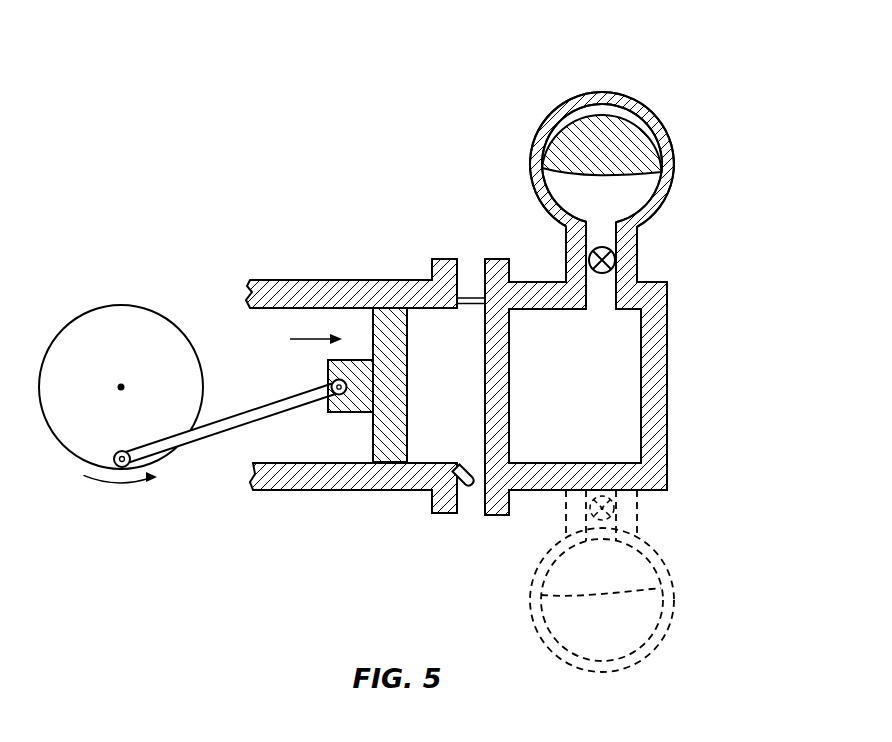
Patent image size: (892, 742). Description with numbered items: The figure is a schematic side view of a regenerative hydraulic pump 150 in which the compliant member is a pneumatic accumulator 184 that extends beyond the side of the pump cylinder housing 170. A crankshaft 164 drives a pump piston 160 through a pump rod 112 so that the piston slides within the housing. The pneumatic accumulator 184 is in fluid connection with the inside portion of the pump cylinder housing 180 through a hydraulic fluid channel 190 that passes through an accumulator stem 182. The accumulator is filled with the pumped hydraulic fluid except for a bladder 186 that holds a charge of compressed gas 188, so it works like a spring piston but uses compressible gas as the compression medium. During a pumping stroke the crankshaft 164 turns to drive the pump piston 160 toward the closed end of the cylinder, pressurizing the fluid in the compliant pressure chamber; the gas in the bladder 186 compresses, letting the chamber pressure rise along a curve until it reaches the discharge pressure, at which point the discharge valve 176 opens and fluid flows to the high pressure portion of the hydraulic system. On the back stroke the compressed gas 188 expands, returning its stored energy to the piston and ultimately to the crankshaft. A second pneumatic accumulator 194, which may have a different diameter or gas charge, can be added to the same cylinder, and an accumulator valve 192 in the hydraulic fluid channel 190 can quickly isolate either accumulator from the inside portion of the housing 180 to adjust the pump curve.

The regenerative hydraulic pump 150 is at (300, 106).
The crankshaft 164 is at (84, 334).
The pump rod 112 is at (228, 428).
The pump cylinder housing 170 is at (322, 292).
The pump piston 160 is at (372, 440).
The discharge valve 176 is at (470, 489).
The inside portion of the pump cylinder housing 180 is at (604, 393).
The hydraulic fluid channel 190 is at (603, 293).
The accumulator stem 182 is at (640, 240).
The pneumatic accumulator 184 is at (673, 185).
The bladder 186 is at (617, 127).
The charge of compressed gas 188 is at (620, 148).
The accumulator valve 192 is at (590, 258).
The second pneumatic accumulator 194 is at (667, 570).